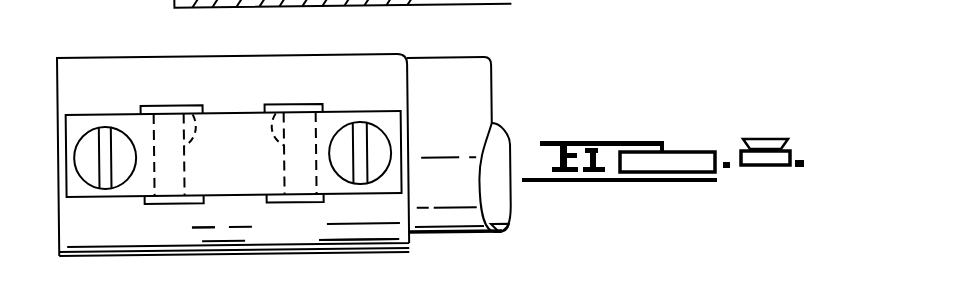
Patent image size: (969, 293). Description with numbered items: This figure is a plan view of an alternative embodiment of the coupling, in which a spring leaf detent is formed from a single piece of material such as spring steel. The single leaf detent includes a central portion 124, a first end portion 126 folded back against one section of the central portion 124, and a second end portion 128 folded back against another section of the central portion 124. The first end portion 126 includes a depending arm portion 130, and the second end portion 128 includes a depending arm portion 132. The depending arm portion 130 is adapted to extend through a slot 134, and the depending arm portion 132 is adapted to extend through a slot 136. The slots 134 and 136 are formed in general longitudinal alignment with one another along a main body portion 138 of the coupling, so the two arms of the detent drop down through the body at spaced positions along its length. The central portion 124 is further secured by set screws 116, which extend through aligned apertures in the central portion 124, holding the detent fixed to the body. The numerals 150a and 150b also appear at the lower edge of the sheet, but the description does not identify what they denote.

The set screws 116 is at (93, 132).
The central portion 124 is at (235, 135).
The first end portion 126 is at (67, 199).
The second end portion 128 is at (410, 100).
The depending arm portion 130 is at (187, 99).
The depending arm portion 132 is at (280, 97).
The slot 134 is at (143, 230).
The slot 136 is at (288, 205).
The main body portion 138 is at (338, 0).
The contact 150a is at (213, 260).
The contact 150b is at (344, 266).